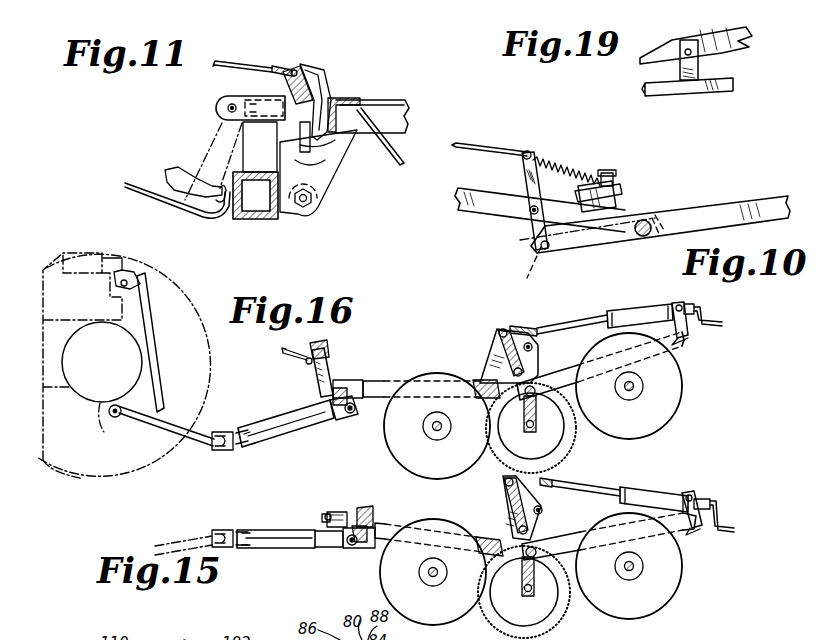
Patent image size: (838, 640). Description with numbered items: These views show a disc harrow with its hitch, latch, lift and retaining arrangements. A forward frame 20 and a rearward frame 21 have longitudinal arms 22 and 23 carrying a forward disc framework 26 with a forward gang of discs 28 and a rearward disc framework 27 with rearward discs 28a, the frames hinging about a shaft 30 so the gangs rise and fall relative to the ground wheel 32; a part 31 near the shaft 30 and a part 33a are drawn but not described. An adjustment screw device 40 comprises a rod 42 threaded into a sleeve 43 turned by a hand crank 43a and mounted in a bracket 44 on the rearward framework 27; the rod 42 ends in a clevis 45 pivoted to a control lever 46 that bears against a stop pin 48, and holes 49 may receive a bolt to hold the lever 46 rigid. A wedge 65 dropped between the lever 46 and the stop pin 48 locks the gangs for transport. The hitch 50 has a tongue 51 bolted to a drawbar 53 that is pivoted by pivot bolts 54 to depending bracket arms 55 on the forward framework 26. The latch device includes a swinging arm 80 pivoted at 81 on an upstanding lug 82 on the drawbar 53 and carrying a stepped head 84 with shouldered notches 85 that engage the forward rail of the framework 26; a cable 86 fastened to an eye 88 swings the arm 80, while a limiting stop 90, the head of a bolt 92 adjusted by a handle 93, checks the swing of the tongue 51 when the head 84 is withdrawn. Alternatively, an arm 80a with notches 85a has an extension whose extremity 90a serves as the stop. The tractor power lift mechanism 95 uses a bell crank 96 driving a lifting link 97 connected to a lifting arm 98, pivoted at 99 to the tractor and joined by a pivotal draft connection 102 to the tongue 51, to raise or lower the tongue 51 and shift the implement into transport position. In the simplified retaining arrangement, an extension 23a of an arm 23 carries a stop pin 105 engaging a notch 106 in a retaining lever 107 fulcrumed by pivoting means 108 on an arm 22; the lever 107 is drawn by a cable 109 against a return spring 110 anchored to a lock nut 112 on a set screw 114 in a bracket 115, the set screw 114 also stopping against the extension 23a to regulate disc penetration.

In FIG. 16, the forward frame 20 is at (497, 380).
In FIG. 15, the forward frame 20 is at (499, 530).
In FIG. 16, the rearward frame 21 is at (553, 376).
In FIG. 15, the rearward frame 21 is at (553, 546).
In FIG. 10, the arms 22 is at (486, 215).
In FIG. 10, the arms 23 is at (752, 202).
In FIG. 10, the extension 23a is at (596, 238).
In FIG. 11, the forward disc framework 26 is at (410, 102).
In FIG. 16, the forward disc framework 26 is at (391, 378).
In FIG. 15, the forward disc framework 26 is at (399, 522).
In FIG. 16, the rearward disc framework 27 is at (686, 338).
In FIG. 15, the rearward disc framework 27 is at (692, 529).
In FIG. 16, the forward gang of discs 28 is at (400, 440).
In FIG. 15, the forward gang of discs 28 is at (396, 588).
In FIG. 16, the rearward discs 28a is at (680, 398).
In FIG. 15, the rearward discs 28a is at (682, 578).
In FIG. 10, the shaft 30 is at (645, 220).
In FIG. 16, the shaft 30 is at (515, 393).
In FIG. 15, the shaft 30 is at (528, 556).
In FIG. 10, the pivot axis 31 is at (662, 220).
In FIG. 16, the ground wheel 32 is at (575, 445).
In FIG. 15, the ground wheel 32 is at (570, 614).
In FIG. 16, the coulter arm pivot 33a is at (530, 428).
In FIG. 15, the coulter arm pivot 33a is at (528, 592).
In FIG. 16, the adjustment screw device 40 is at (624, 313).
In FIG. 15, the adjustment screw device 40 is at (640, 487).
In FIG. 16, the rod 42 is at (580, 322).
In FIG. 15, the rod 42 is at (600, 487).
In FIG. 16, the internally threaded sleeve 43 is at (678, 318).
In FIG. 15, the internally threaded sleeve 43 is at (686, 494).
In FIG. 16, the hand crank 43a is at (716, 318).
In FIG. 15, the hand crank 43a is at (726, 522).
In FIG. 16, the bracket 44 is at (688, 310).
In FIG. 15, the bracket 44 is at (704, 498).
In FIG. 16, the clevis 45 is at (532, 326).
In FIG. 15, the clevis 45 is at (562, 483).
In FIG. 16, the control lever 46 is at (498, 350).
In FIG. 15, the control lever 46 is at (506, 500).
In FIG. 16, the stop pin 48 is at (531, 343).
In FIG. 15, the stop pin 48 is at (542, 511).
In FIG. 16, the holes 49 is at (500, 330).
In FIG. 15, the holes 49 is at (504, 481).
In FIG. 16, the hitch 50 is at (278, 415).
In FIG. 15, the hitch 50 is at (278, 526).
In FIG. 16, the tongue 51 is at (270, 446).
In FIG. 15, the tongue 51 is at (272, 548).
In FIG. 11, the drawbar 53 is at (252, 220).
In FIG. 11, the pivot bolts 54 is at (312, 205).
In FIG. 11, the depending bracket arms 55 is at (355, 158).
In FIG. 16, the wedge 65 is at (510, 326).
In FIG. 15, the wedge 65 is at (535, 500).
In FIG. 11, the swinging latch arm 80 is at (252, 97).
In FIG. 16, the swinging latch arm 80 is at (328, 375).
In FIG. 15, the swinging latch arm 80 is at (340, 512).
In FIG. 19, the arm 80a is at (712, 36).
In FIG. 11, the pivot 81 is at (228, 107).
In FIG. 19, the pivot 81 is at (683, 50).
In FIG. 11, the upstanding lug 82 is at (225, 138).
In FIG. 19, the upstanding lug 82 is at (700, 64).
In FIG. 11, the head 84 is at (304, 70).
In FIG. 16, the head 84 is at (332, 350).
In FIG. 15, the head 84 is at (367, 514).
In FIG. 11, the shouldered notches 85 is at (322, 92).
In FIG. 16, the shouldered notches 85 is at (324, 348).
In FIG. 15, the shouldered notches 85 is at (362, 545).
In FIG. 19, the notches 85a is at (750, 42).
In FIG. 11, the cable 86 is at (232, 62).
In FIG. 16, the cable 86 is at (290, 360).
In FIG. 15, the cable 86 is at (334, 510).
In FIG. 11, the eye 88 is at (296, 70).
In FIG. 16, the eye 88 is at (306, 360).
In FIG. 15, the eye 88 is at (366, 505).
In FIG. 11, the limiting stop 90 is at (344, 99).
In FIG. 16, the limiting stop 90 is at (355, 392).
In FIG. 15, the limiting stop 90 is at (348, 545).
In FIG. 19, the stop 90a is at (685, 48).
In FIG. 11, the bolt 92 is at (272, 97).
In FIG. 16, the bolt 92 is at (351, 414).
In FIG. 11, the handle 93 is at (330, 170).
In FIG. 16, the power lift mechanism 95 is at (122, 250).
In FIG. 16, the power operated bell crank 96 is at (128, 263).
In FIG. 16, the lifting link 97 is at (150, 290).
In FIG. 16, the lifting arm 98 is at (166, 430).
In FIG. 15, the lifting arm 98 is at (168, 545).
In FIG. 16, the pivot 99 is at (112, 416).
In FIG. 16, the pivotal draft connection 102 is at (218, 434).
In FIG. 15, the pivotal draft connection 102 is at (218, 530).
In FIG. 10, the stop pin 105 is at (550, 247).
In FIG. 10, the notch 106 is at (540, 252).
In FIG. 10, the retaining lever 107 is at (527, 175).
In FIG. 10, the pivoting means 108 is at (530, 214).
In FIG. 10, the cable 109 is at (480, 143).
In FIG. 10, the return spring 110 is at (558, 160).
In FIG. 10, the lock nut 112 is at (603, 180).
In FIG. 10, the set screw 114 is at (610, 170).
In FIG. 10, the bracket 115 is at (620, 190).